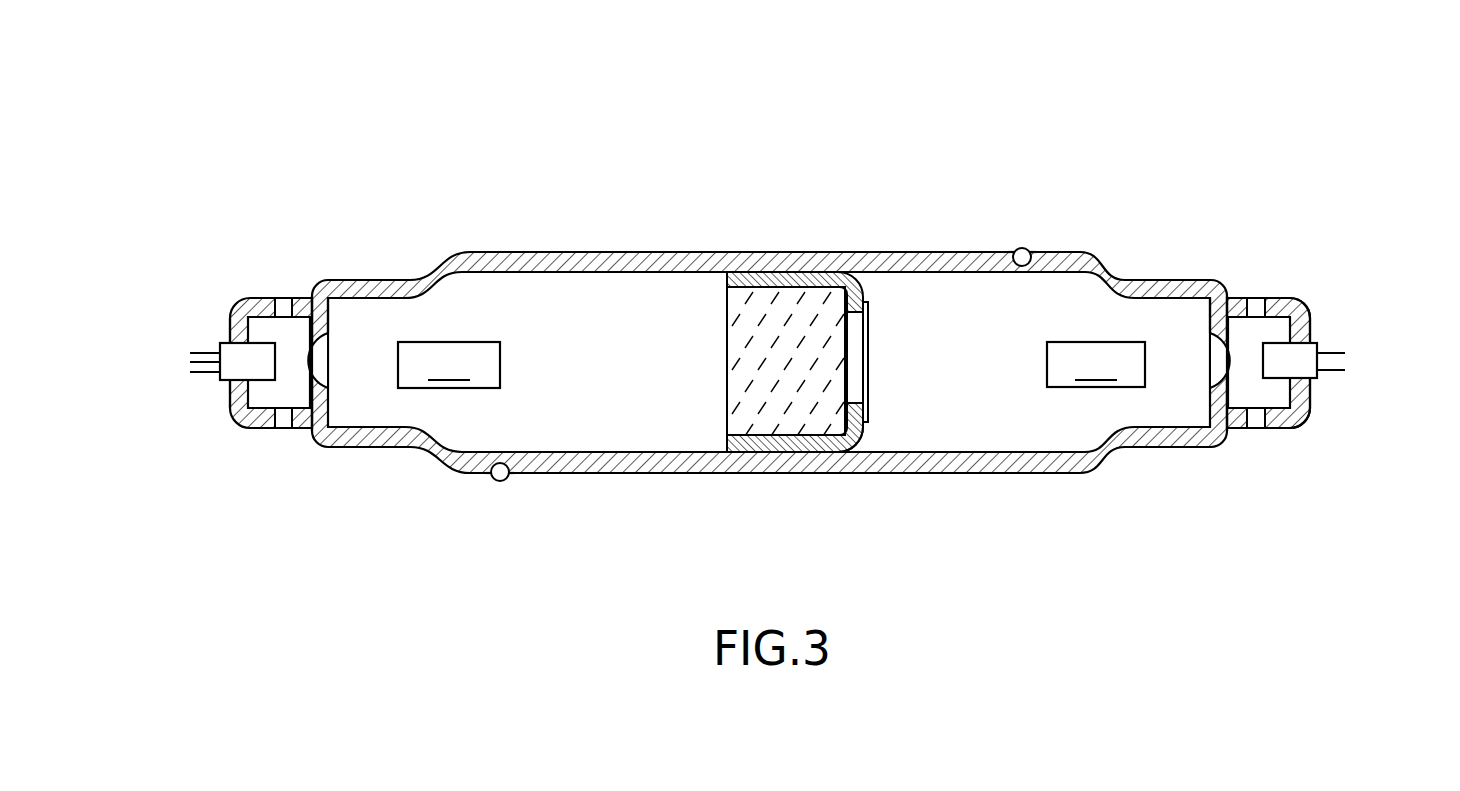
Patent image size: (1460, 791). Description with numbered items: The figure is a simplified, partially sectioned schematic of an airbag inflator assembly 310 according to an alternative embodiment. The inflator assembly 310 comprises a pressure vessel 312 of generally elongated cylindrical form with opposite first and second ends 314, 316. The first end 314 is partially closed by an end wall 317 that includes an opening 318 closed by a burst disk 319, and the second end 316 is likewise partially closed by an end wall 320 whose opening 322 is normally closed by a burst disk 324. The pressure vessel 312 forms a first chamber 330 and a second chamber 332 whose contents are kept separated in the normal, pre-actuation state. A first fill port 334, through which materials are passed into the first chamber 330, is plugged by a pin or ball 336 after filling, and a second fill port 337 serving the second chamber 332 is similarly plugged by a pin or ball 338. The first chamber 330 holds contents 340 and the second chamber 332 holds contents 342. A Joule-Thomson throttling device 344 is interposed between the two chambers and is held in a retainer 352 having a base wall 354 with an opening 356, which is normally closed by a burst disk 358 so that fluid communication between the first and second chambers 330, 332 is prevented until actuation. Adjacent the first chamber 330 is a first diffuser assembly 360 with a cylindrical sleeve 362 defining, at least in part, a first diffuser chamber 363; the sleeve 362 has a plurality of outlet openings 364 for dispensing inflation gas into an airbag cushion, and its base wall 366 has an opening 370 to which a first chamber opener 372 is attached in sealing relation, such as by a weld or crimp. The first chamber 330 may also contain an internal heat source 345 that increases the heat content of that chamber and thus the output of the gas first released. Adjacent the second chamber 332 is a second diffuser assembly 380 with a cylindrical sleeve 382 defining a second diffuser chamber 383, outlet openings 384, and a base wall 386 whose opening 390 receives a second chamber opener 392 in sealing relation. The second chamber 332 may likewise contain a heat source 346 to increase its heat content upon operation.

The inflator assembly 310 is at (930, 145).
The pressure vessel 312 is at (797, 250).
The first end 314 is at (1212, 228).
The second end 316 is at (305, 167).
The end wall 317 is at (1227, 430).
The opening 318 is at (1223, 297).
The burst disk 319 is at (1217, 372).
The end wall 320 is at (313, 423).
The opening 322 is at (321, 299).
The burst disk 324 is at (313, 363).
The first chamber 330 is at (946, 463).
The second chamber 332 is at (663, 462).
The first fill port 334 is at (1012, 262).
The pin or ball 336 is at (1025, 250).
The second fill port 337 is at (487, 463).
The pin or ball 338 is at (500, 481).
The contents of the first chamber 340 is at (1023, 428).
The contents of the second chamber 342 is at (557, 377).
The Joule-Thomson throttling device 344 is at (770, 325).
The heat source 345 is at (1096, 364).
The heat source 346 is at (449, 365).
The retainer 352 is at (750, 454).
The base wall 354 is at (845, 440).
The opening 356 is at (845, 327).
The burst disk 358 is at (868, 357).
The first diffuser assembly 360 is at (1315, 275).
The cylindrical sleeve 362 is at (1243, 428).
The first diffuser chamber 363 is at (1250, 337).
The outlet openings 364 is at (1257, 422).
The base wall 366 is at (1310, 398).
The opening 370 is at (1307, 322).
The first chamber opener 372 is at (1310, 362).
The second diffuser assembly 380 is at (200, 293).
The cylindrical sleeve 382 is at (265, 298).
The second diffuser chamber 383 is at (285, 336).
The outlet openings 384 is at (283, 415).
The base wall 386 is at (243, 423).
The opening 390 is at (232, 385).
The second chamber opener 392 is at (190, 363).